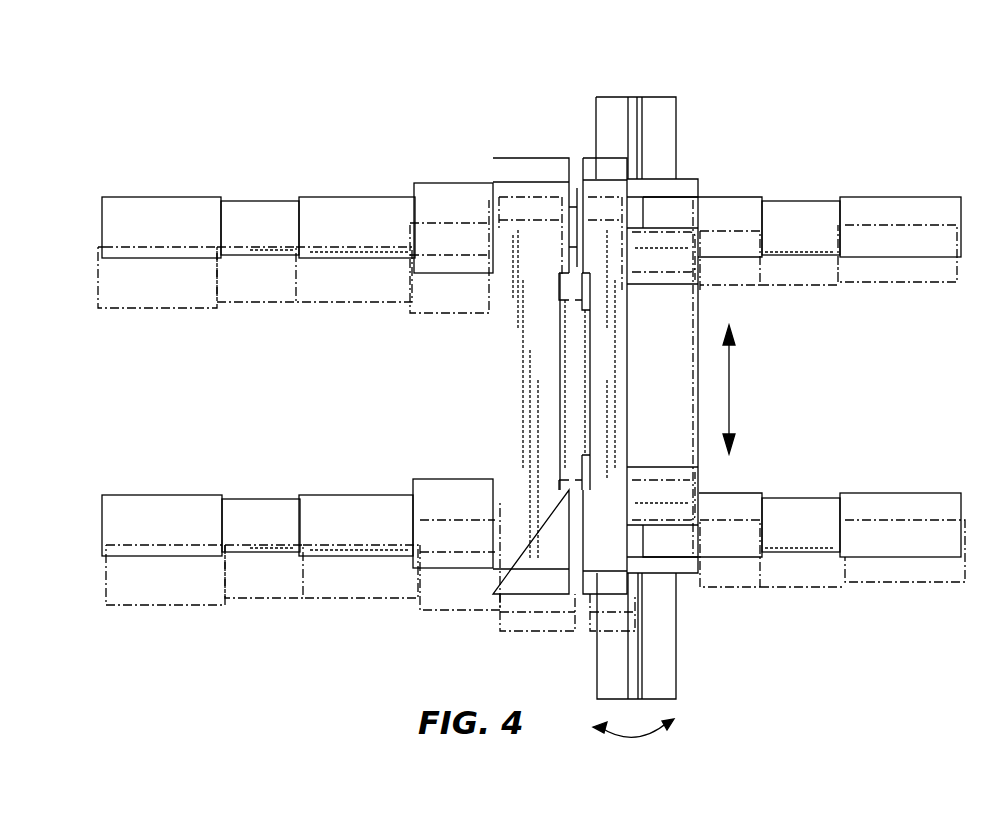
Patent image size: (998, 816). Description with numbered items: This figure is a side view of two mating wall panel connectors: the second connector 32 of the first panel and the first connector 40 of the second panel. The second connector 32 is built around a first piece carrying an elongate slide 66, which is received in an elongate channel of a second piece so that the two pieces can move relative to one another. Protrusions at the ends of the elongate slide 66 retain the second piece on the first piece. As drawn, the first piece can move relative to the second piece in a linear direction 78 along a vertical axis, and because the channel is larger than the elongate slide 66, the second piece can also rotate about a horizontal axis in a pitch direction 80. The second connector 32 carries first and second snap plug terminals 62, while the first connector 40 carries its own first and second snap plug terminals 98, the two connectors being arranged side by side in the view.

The second connector 32 is at (702, 160).
The first connector 40 is at (487, 142).
The snap plug terminals 62 is at (918, 205).
The elongate slide 66 is at (638, 127).
The linear direction 78 is at (731, 388).
The pitch direction 80 is at (641, 738).
The snap plug terminals 98 is at (185, 210).